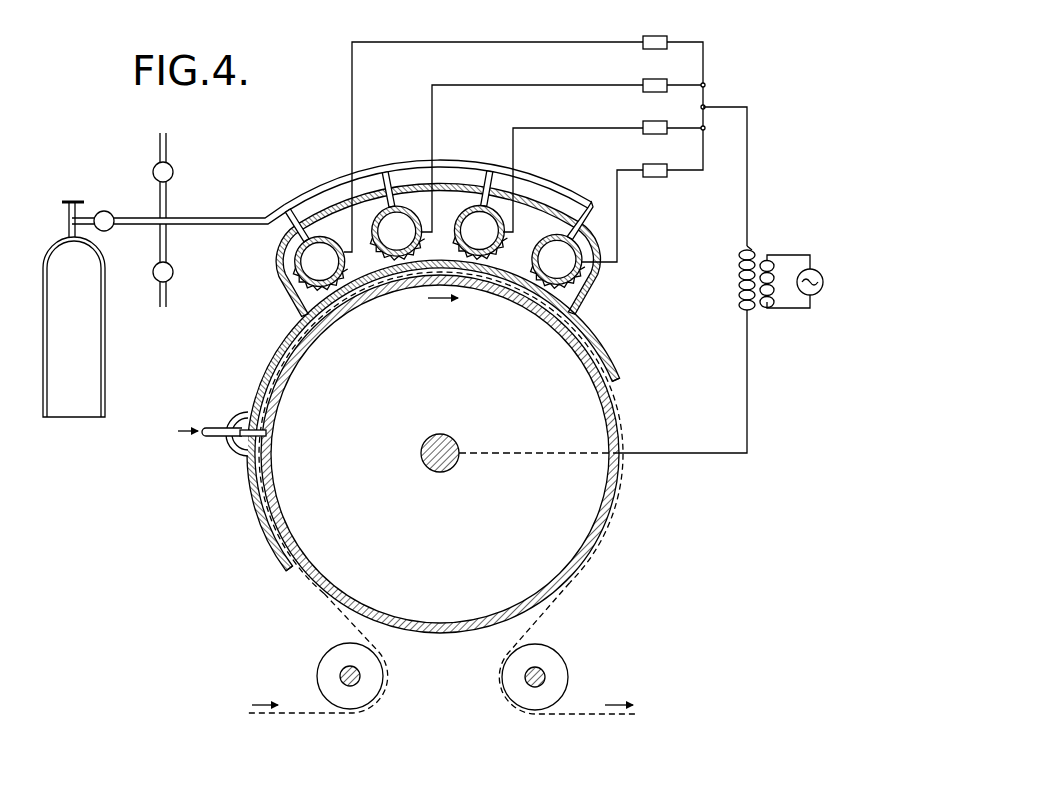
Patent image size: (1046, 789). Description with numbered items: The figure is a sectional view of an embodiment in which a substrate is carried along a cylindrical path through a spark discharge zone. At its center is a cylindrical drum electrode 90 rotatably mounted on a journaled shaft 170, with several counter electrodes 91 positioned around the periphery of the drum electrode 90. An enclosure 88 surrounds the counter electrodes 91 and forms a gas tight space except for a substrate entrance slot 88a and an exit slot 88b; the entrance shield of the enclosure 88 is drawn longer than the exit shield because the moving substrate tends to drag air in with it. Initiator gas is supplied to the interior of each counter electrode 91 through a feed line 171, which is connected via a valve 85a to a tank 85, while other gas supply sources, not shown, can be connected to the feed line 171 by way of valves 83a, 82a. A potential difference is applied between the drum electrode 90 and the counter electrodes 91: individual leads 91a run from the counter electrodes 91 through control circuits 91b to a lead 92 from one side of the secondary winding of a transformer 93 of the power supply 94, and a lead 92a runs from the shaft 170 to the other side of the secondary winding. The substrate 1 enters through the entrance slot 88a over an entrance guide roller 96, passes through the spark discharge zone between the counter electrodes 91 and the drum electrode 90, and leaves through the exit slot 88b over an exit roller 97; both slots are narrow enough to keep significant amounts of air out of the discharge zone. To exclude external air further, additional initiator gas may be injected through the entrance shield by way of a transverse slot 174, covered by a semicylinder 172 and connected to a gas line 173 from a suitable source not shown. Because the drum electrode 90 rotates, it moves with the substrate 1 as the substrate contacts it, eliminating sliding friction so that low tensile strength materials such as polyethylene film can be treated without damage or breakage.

The substrate 1 is at (340, 614).
The valve 82a is at (174, 272).
The valve 83a is at (174, 172).
The tank 85 is at (100, 349).
The valve 85a is at (105, 211).
The enclosure 88 is at (254, 514).
The entrance slot 88a is at (292, 578).
The exit slot 88b is at (621, 383).
The cylindrical drum electrode 90 is at (606, 532).
The counter electrodes 91 is at (302, 290).
The individual leads 91a is at (482, 42).
The control circuits 91b is at (655, 36).
The lead 92 is at (748, 172).
The lead 92a is at (748, 396).
The transformer 93 is at (761, 249).
The power supply 94 is at (824, 275).
The entrance guide roller 96 is at (318, 676).
The exit roller 97 is at (569, 672).
The journaled shaft 170 is at (437, 435).
The feed line 171 is at (312, 190).
The semicylinder 172 is at (238, 455).
The gas line 173 is at (213, 425).
The transverse slot 174 is at (253, 437).